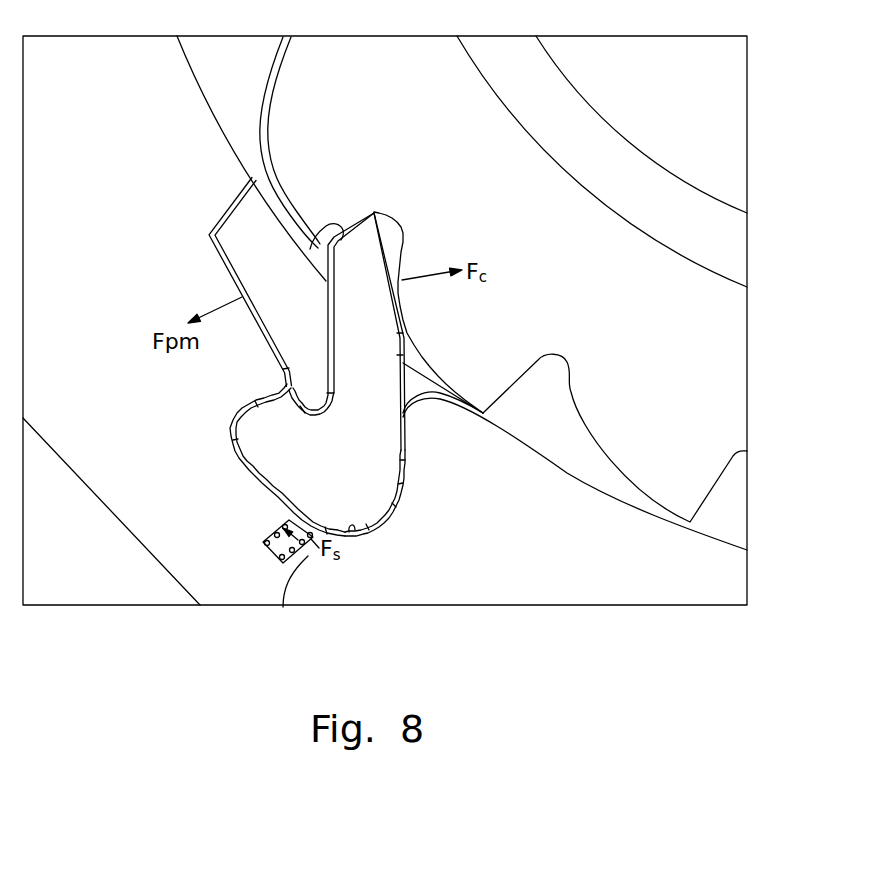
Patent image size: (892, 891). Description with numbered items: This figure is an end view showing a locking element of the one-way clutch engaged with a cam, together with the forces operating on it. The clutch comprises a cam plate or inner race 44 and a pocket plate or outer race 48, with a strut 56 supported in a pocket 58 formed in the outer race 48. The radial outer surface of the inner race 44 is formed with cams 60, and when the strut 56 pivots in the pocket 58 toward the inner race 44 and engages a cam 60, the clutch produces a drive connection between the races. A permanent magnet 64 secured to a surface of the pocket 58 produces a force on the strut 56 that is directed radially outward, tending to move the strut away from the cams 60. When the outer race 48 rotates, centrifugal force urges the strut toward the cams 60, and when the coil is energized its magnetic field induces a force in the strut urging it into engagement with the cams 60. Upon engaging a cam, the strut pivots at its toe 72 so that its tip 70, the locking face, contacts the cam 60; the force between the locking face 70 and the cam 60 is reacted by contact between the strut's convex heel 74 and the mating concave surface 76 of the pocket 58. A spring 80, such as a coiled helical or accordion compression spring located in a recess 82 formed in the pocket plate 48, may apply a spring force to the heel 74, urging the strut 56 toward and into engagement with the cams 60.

The inner race 44 is at (607, 133).
The outer race 48 is at (183, 102).
The strut 56 is at (346, 474).
The pocket 58 is at (263, 485).
The cam 60 is at (500, 396).
The permanent magnet 64 is at (230, 250).
The tip 70 is at (328, 238).
The toe 72 is at (234, 433).
The heel 74 is at (367, 527).
The concave surface 76 is at (350, 536).
The spring 80 is at (268, 552).
The recess 82 is at (288, 597).